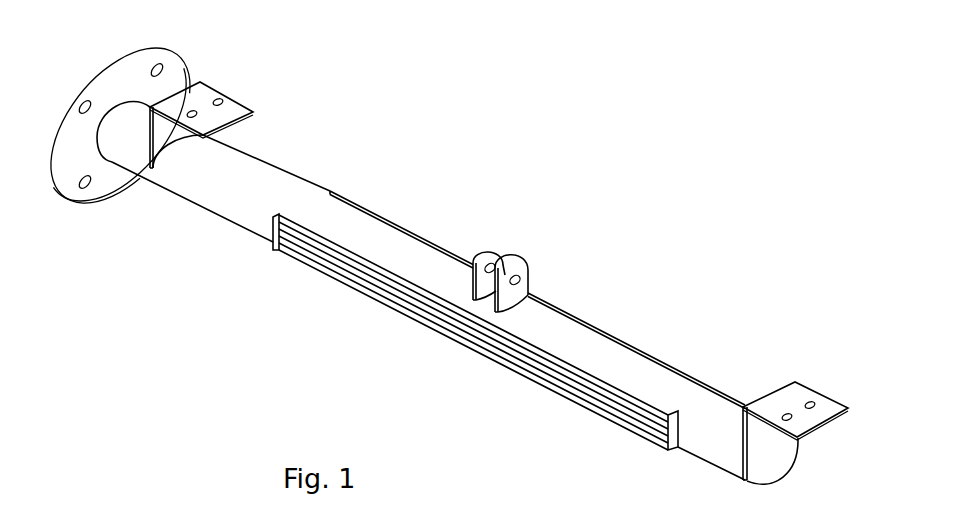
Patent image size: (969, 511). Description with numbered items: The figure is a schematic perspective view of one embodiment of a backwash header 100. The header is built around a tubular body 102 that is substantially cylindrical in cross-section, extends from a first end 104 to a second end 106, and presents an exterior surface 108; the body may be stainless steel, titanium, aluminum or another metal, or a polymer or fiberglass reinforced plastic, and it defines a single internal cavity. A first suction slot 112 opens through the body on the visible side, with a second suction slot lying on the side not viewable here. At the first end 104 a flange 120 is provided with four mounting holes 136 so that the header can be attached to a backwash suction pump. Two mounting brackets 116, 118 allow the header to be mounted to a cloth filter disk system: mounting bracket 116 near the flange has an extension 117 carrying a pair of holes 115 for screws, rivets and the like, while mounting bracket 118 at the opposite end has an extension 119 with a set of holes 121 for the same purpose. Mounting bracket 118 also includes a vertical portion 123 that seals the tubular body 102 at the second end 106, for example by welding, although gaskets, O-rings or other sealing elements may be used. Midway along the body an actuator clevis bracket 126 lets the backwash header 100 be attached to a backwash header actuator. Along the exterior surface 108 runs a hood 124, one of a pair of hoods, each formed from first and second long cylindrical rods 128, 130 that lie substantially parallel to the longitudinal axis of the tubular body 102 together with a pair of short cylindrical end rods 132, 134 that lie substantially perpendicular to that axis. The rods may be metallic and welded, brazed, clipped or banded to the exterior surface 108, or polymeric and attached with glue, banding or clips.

The backwash header 100 is at (471, 257).
The tubular body 102 is at (207, 208).
The first end 104 is at (126, 154).
The second end 106 is at (737, 462).
The exterior surface 108 is at (308, 196).
The first suction slot 112 is at (608, 407).
The pair of holes 115 is at (198, 113).
The mounting bracket 116 is at (214, 80).
The extension 117 is at (258, 112).
The mounting bracket 118 is at (830, 400).
The extension 119 is at (800, 381).
The flange 120 is at (79, 86).
The set of holes 121 is at (798, 440).
The vertical portion 123 is at (787, 453).
The hood 124 is at (632, 345).
The actuator clevis bracket 126 is at (530, 273).
The first long cylindrical rod 128 is at (500, 355).
The second long cylindrical rod 130 is at (352, 268).
The short cylindrical end rod 132 is at (272, 232).
The short cylindrical end rod 134 is at (680, 447).
The mounting holes 136 is at (98, 103).